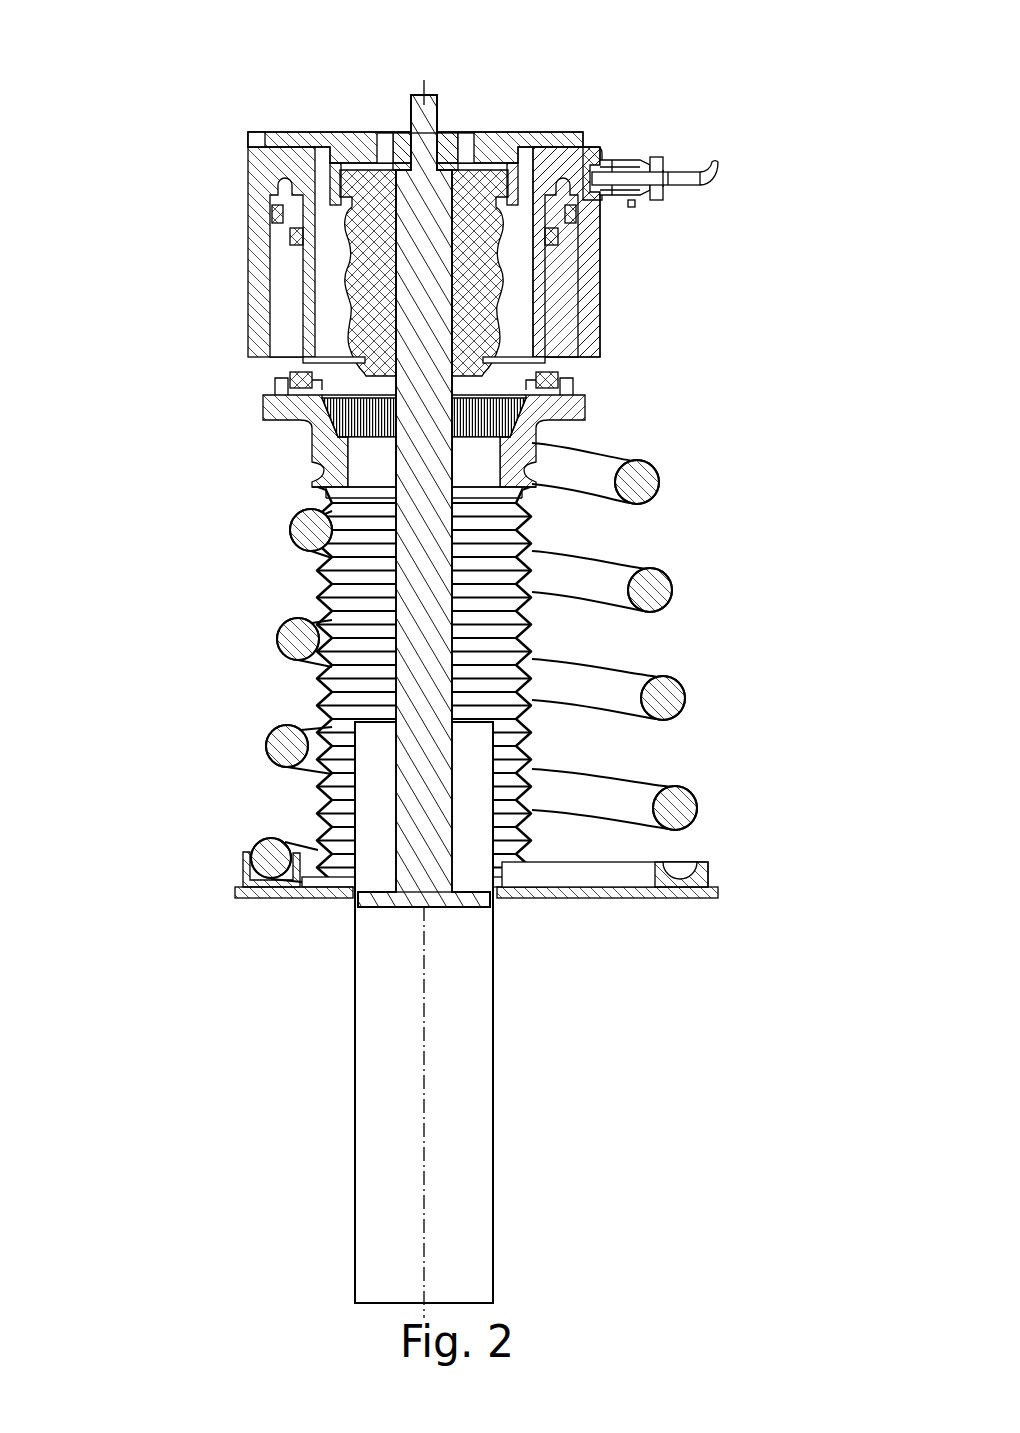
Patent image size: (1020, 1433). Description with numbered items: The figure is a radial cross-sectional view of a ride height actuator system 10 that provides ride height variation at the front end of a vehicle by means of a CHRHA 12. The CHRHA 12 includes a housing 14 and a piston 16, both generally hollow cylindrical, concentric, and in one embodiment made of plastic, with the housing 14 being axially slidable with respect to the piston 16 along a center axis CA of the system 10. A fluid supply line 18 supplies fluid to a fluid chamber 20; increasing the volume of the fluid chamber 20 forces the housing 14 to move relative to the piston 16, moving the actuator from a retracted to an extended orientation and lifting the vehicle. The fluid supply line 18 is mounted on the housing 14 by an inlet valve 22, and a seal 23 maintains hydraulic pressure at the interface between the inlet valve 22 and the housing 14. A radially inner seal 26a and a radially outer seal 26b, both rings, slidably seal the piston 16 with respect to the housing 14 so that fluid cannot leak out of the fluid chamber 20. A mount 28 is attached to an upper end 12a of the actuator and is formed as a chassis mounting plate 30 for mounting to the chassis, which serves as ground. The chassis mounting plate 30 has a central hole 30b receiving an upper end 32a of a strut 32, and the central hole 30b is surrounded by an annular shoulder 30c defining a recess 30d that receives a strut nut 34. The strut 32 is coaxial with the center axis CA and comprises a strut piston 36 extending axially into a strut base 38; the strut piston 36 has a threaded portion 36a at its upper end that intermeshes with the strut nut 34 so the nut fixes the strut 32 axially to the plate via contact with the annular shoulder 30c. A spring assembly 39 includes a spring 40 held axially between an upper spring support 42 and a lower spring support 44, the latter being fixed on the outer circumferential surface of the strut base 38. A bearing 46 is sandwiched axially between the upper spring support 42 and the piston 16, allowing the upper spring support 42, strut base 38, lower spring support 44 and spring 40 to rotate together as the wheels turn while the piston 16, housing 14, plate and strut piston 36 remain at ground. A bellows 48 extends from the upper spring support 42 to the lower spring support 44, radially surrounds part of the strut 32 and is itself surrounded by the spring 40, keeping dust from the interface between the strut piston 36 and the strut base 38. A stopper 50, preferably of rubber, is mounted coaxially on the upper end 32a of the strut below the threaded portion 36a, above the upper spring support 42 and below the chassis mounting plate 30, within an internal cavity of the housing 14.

The ride height actuator system 10 is at (467, 659).
The CHRHA 12 is at (623, 196).
The upper end of actuator 12a is at (586, 122).
The housing 14 is at (263, 333).
The piston 16 is at (284, 278).
The fluid supply line 18 is at (700, 185).
The fluid chamber 20 is at (266, 303).
The inlet valve 22 is at (656, 165).
The seal 23 is at (594, 192).
The radially inner seal 26a is at (297, 240).
The radially outer seal 26b is at (281, 212).
The mount 28 is at (312, 128).
The chassis mounting plate 30 is at (283, 135).
The central hole 30b is at (466, 122).
The annular shoulder 30c is at (385, 160).
The recess 30d is at (362, 124).
The strut 32 is at (349, 1001).
The upper end of strut 32a is at (404, 91).
The strut nut 34 is at (442, 138).
The strut piston 36 is at (405, 582).
The threaded portion 36a is at (430, 105).
The strut base 38 is at (473, 963).
The spring assembly 39 is at (234, 903).
The spring 40 is at (693, 702).
The upper spring support 42 is at (284, 452).
The lower spring support 44 is at (706, 905).
The bearing 46 is at (273, 380).
The bellows 48 is at (315, 688).
The stopper 50 is at (483, 322).
The center axis CA is at (430, 1130).